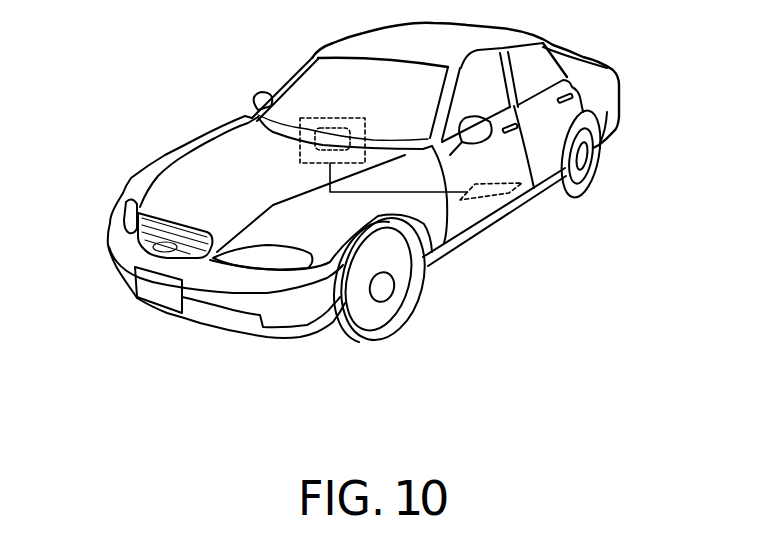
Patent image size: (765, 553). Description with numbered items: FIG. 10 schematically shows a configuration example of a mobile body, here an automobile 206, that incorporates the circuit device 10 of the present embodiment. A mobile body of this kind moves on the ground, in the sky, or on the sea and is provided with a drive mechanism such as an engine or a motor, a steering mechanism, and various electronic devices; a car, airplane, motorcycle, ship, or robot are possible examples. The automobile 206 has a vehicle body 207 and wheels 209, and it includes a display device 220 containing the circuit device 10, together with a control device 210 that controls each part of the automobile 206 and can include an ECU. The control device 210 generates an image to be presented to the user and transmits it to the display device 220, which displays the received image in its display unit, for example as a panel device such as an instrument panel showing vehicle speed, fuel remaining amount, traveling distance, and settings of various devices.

The automobile 206 is at (113, 142).
The vehicle body 207 is at (227, 128).
The circuit device 10 is at (333, 129).
The display device 220 is at (298, 146).
The control device 210 is at (508, 193).
The wheels 209 is at (407, 320).